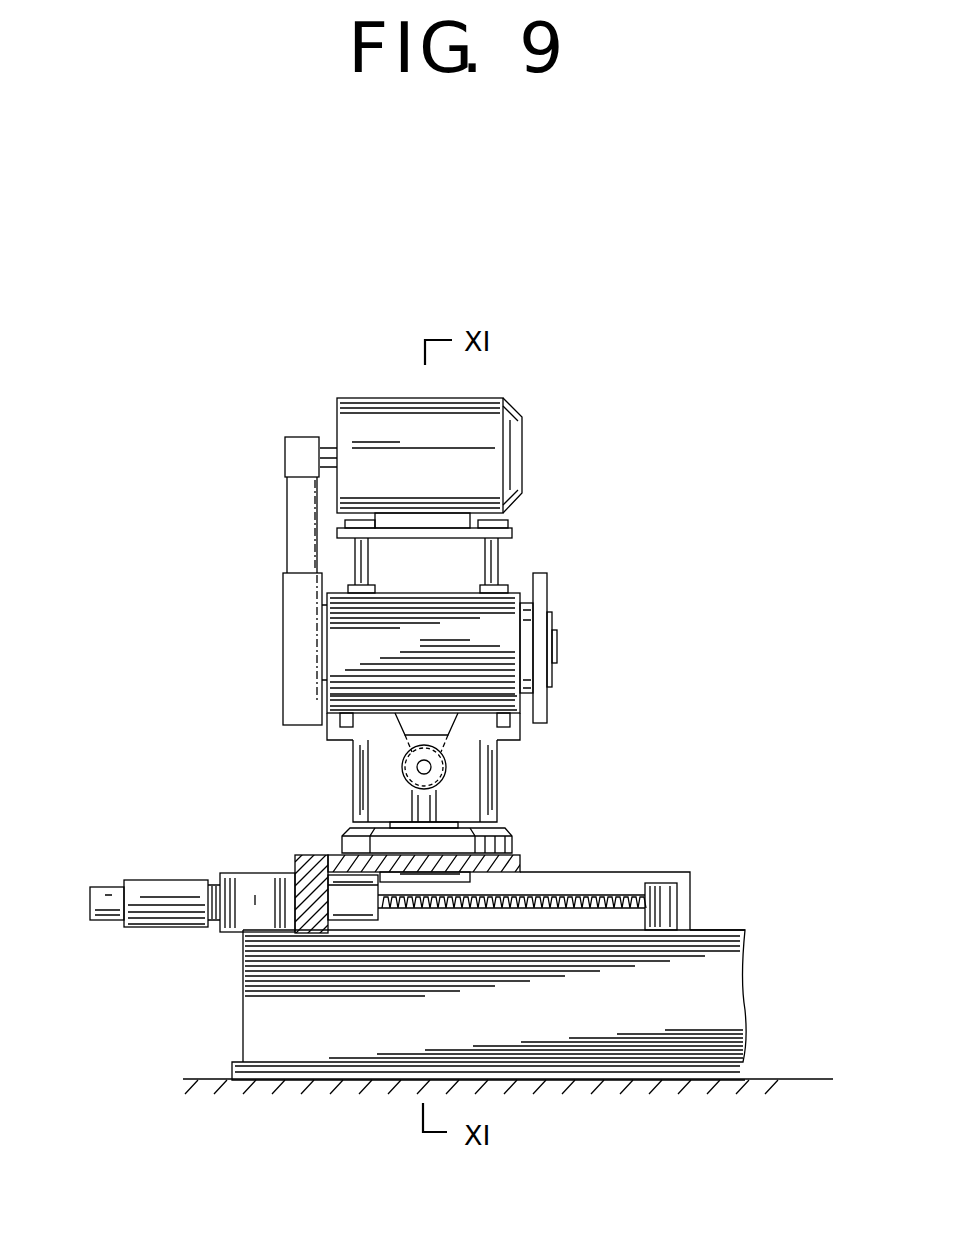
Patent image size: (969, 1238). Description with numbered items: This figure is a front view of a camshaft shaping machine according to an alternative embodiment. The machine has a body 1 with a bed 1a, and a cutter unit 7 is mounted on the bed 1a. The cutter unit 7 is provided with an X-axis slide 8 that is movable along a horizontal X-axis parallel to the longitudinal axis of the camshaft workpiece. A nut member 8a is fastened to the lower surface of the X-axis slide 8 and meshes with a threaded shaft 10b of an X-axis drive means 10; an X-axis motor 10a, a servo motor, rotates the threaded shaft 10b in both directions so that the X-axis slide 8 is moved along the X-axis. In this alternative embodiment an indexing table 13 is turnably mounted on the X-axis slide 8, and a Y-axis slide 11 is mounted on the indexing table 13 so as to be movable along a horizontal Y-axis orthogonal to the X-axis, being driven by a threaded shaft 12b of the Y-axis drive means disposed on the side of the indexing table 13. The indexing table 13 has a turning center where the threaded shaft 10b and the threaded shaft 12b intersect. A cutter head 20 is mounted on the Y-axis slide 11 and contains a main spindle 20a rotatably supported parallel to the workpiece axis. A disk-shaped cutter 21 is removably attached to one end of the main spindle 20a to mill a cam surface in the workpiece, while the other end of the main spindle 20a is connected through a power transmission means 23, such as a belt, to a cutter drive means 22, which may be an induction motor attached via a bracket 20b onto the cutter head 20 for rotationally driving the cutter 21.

The body 1 is at (243, 1020).
The bed 1a is at (709, 950).
The cutter unit 7 is at (332, 769).
The X-axis slide 8 is at (331, 861).
The nut member 8a is at (356, 917).
The X-axis drive means 10 is at (179, 878).
The X-axis motor 10a is at (191, 917).
The threaded shaft 10b is at (571, 893).
The Y-axis slide 11 is at (510, 710).
The threaded shaft 12b is at (430, 767).
The indexing table 13 is at (478, 808).
The cutter head 20 is at (345, 615).
The main spindle 20a is at (593, 648).
The bracket 20b is at (512, 533).
The cutter 21 is at (540, 574).
The cutter drive means 22 is at (483, 417).
The power transmission means 23 is at (293, 525).